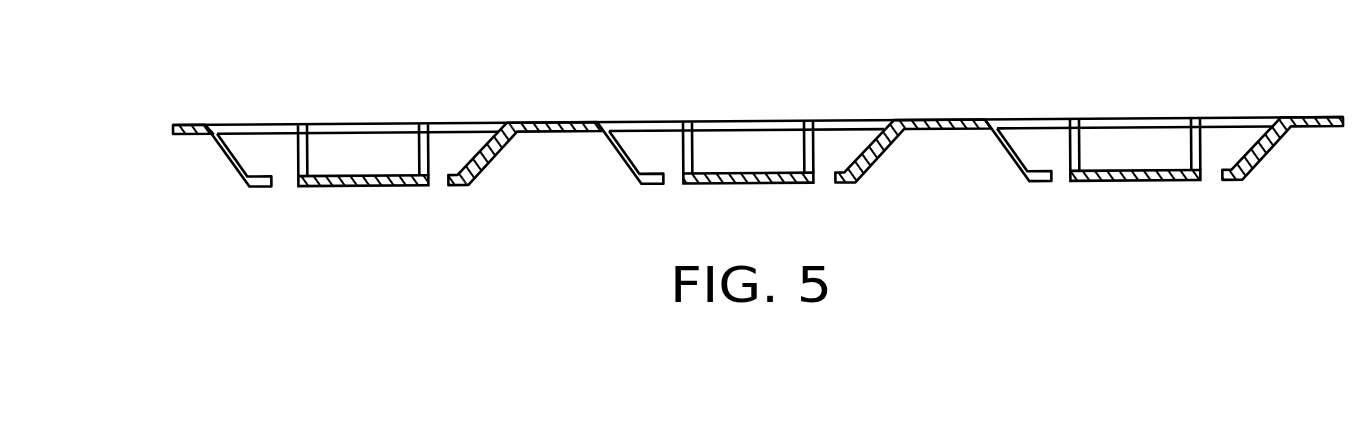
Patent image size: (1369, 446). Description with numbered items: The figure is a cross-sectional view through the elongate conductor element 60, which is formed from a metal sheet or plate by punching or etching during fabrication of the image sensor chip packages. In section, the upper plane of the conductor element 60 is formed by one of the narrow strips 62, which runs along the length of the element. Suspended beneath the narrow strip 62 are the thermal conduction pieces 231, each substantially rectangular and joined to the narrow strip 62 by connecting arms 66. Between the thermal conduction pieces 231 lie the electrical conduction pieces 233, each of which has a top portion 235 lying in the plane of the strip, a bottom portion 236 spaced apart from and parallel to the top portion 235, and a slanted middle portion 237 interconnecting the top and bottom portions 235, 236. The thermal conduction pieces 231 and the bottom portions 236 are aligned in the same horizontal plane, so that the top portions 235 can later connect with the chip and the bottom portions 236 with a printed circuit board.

The conductor element 60 is at (1043, 96).
The narrow strip 62 is at (256, 131).
The connecting arm 66 is at (688, 143).
The thermal conduction piece 231 is at (737, 178).
The electrical conduction piece 233 is at (863, 102).
The top portion 235 is at (925, 97).
The bottom portion 236 is at (455, 172).
The middle portion 237 is at (484, 150).